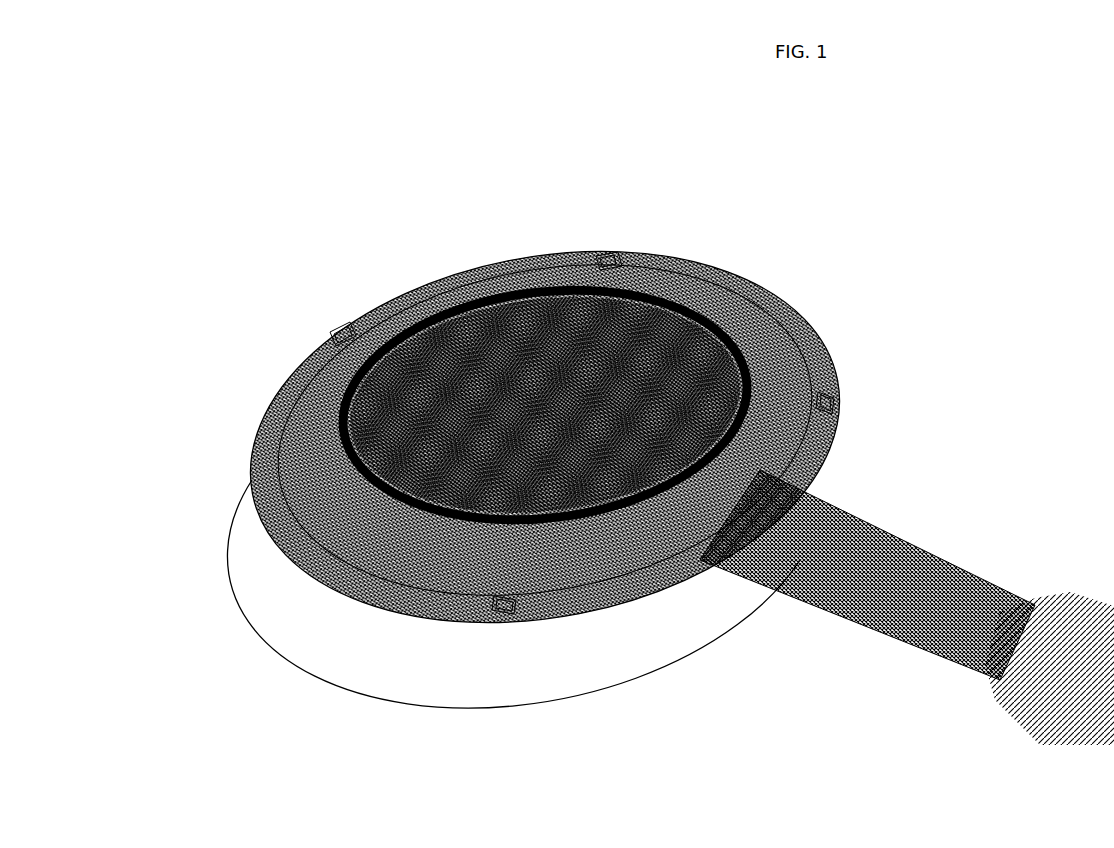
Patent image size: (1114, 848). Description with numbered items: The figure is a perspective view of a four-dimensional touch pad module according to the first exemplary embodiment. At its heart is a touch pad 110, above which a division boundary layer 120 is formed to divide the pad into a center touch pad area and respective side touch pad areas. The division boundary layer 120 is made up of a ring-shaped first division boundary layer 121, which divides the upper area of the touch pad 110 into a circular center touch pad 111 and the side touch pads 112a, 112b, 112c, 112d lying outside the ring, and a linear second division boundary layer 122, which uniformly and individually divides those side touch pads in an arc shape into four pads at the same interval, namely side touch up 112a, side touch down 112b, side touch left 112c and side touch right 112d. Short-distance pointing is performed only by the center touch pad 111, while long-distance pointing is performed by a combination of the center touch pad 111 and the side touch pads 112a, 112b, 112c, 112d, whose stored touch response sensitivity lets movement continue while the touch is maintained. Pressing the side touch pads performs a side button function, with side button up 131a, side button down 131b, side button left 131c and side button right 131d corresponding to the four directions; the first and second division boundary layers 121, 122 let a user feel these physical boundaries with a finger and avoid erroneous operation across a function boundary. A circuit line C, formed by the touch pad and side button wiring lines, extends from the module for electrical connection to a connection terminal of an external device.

The touch pad 110 is at (740, 273).
The center touch pad 111 is at (800, 310).
The side touch up (STU) side touch pad 112a is at (633, 227).
The side touch down (STD) side touch pad 112b is at (503, 612).
The side touch left (STL) side touch pad 112c is at (337, 330).
The side touch right (STR) side touch pad 112d is at (837, 403).
The side button up (SBU) 131a is at (644, 234).
The side button down (SBD) 131b is at (539, 641).
The side button left (SBL) 131c is at (348, 316).
The side button right (SBR) 131d is at (897, 402).
The division boundary layer 120 is at (256, 447).
The first division boundary layer 121 is at (268, 412).
The second division boundary layer 122 is at (260, 500).
The circuit line C is at (870, 525).